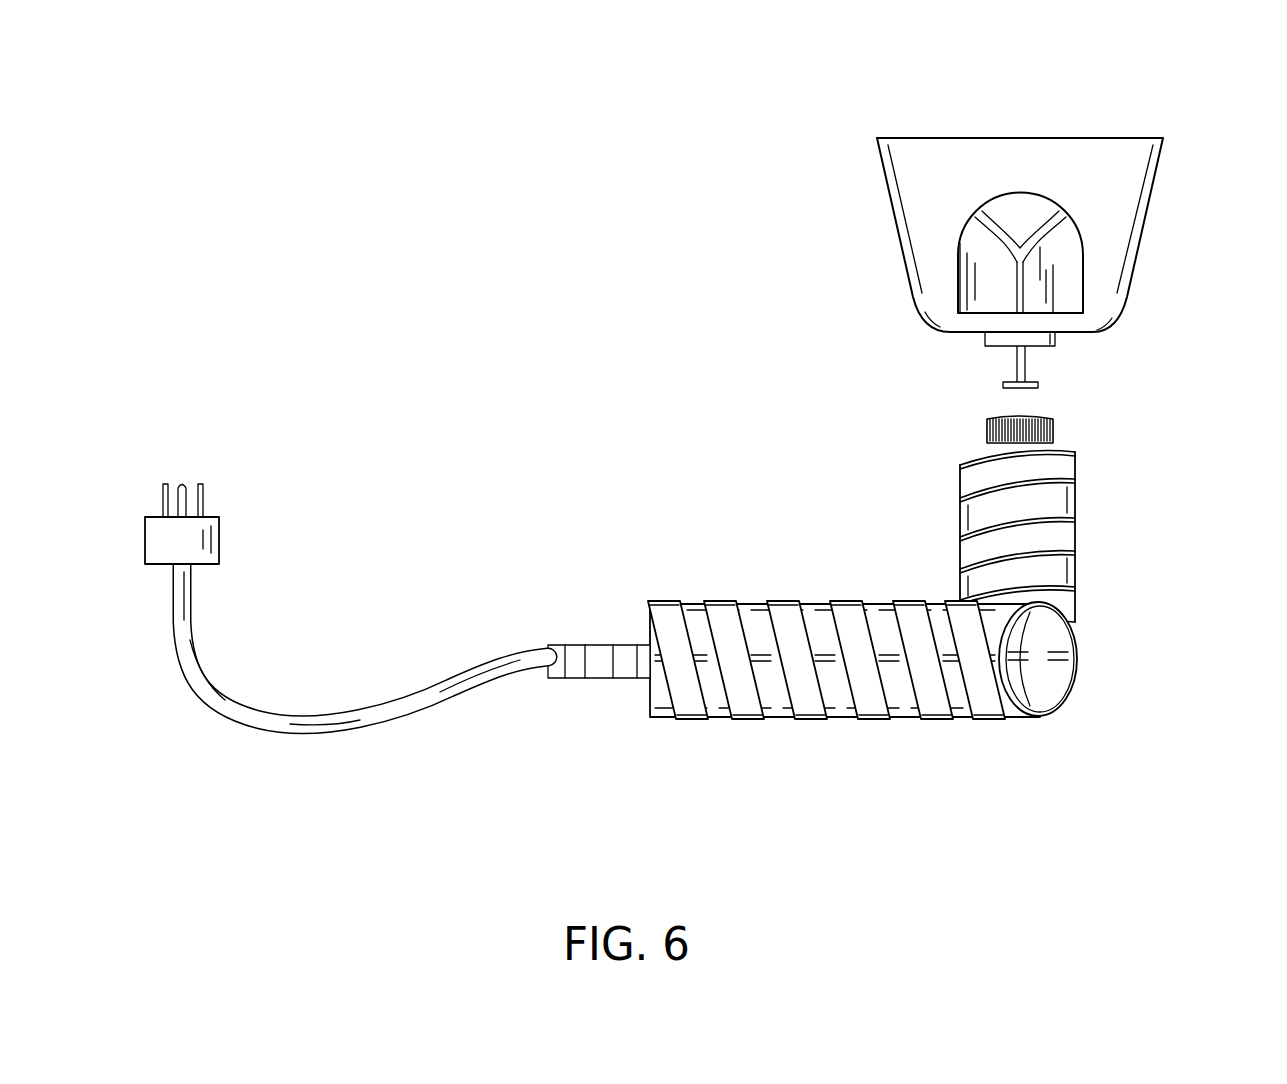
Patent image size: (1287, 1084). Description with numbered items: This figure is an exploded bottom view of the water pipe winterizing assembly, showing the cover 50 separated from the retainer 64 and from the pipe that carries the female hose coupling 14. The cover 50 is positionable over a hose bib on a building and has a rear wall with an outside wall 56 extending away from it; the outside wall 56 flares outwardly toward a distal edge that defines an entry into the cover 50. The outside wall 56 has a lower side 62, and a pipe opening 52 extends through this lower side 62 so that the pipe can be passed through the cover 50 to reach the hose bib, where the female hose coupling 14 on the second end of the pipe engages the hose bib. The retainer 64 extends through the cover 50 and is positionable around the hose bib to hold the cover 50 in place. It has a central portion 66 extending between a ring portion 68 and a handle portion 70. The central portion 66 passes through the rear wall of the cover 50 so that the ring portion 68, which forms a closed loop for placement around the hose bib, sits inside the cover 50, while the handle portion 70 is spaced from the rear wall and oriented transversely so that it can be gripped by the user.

The female hose coupling 14 is at (1053, 424).
The cover 50 is at (887, 193).
The pipe opening 52 is at (1058, 283).
The outside wall 56 is at (1125, 188).
The lower side 62 is at (942, 172).
The retainer 64 is at (1015, 277).
The central portion 66 is at (1023, 263).
The ring portion 68 is at (990, 218).
The handle portion 70 is at (1003, 385).